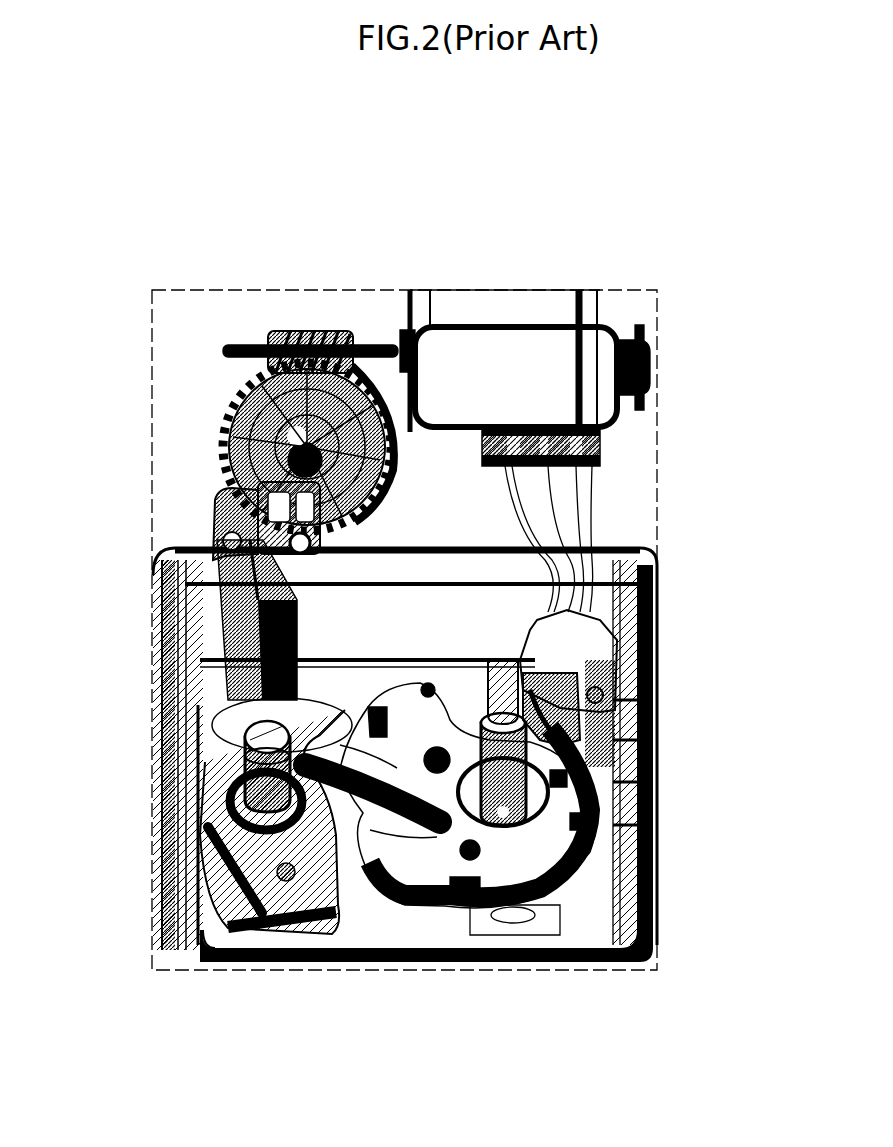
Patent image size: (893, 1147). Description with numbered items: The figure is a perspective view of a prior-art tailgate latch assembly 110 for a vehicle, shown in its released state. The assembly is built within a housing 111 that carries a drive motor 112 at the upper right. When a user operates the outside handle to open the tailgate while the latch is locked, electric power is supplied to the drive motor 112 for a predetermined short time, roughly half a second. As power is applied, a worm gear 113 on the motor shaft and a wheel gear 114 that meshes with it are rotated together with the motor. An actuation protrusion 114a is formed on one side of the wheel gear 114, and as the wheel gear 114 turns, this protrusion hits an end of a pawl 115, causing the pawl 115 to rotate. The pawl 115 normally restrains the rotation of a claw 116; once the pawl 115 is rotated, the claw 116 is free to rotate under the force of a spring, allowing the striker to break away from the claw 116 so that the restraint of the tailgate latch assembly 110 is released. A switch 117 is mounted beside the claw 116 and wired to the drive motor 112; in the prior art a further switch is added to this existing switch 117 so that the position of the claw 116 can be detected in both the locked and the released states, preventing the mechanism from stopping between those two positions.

The tailgate latch assembly 110 is at (652, 165).
The housing 111 is at (200, 703).
The drive motor 112 is at (510, 357).
The worm gear 113 is at (305, 330).
The wheel gear 114 is at (230, 405).
The actuation protrusion 114a is at (312, 540).
The pawl 115 is at (265, 863).
The claw 116 is at (545, 825).
The switch 117 is at (578, 650).